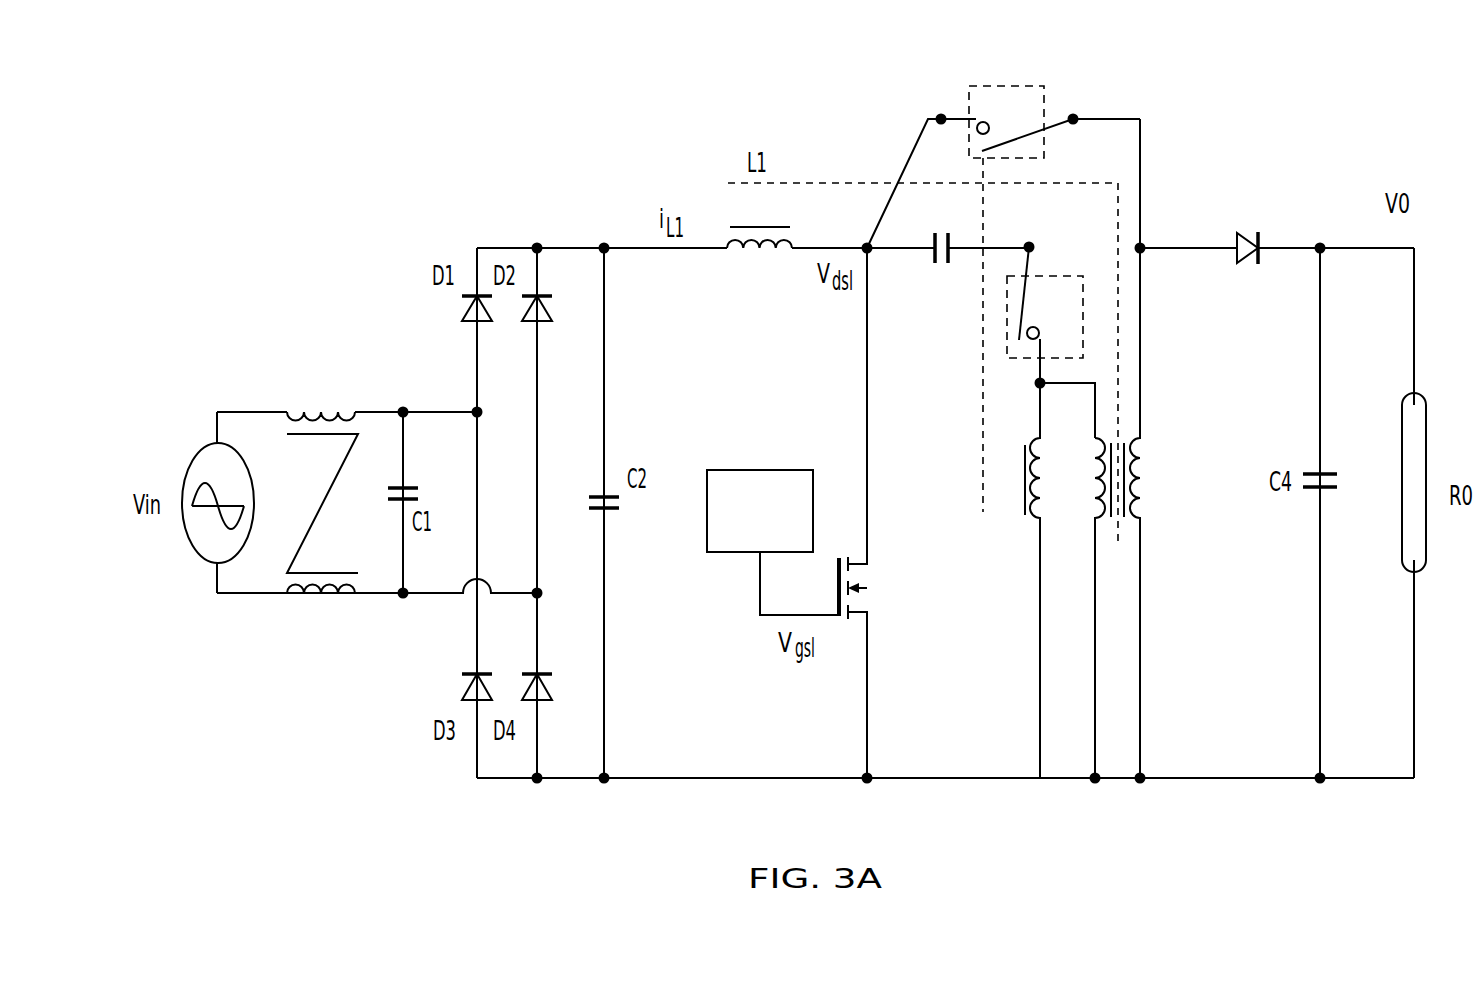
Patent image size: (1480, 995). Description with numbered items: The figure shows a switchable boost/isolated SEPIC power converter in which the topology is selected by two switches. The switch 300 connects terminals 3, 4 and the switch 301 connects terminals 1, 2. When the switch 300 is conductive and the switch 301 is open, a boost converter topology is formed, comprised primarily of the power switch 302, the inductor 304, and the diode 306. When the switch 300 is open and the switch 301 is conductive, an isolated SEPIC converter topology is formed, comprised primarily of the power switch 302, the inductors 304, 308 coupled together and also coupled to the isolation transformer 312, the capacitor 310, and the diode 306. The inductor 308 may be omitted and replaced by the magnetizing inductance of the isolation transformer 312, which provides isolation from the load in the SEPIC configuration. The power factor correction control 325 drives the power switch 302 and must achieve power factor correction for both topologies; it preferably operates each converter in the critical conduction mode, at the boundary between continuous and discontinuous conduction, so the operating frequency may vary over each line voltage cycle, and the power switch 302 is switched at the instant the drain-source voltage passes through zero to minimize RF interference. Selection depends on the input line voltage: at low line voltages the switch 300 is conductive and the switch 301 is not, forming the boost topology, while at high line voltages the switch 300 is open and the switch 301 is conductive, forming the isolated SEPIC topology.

The switch 300 is at (1003, 167).
The switch 301 is at (1056, 315).
The power switch 302 is at (870, 605).
The inductor 304 is at (750, 252).
The diode 306 is at (1245, 264).
The inductor 308 is at (1038, 518).
The capacitor 310 is at (955, 203).
The isolation transformer 312 is at (1145, 452).
The power factor correction (PFC) control 325 is at (748, 468).
The switch terminal 1 is at (1034, 380).
The switch terminal 2 is at (1038, 247).
The switch terminal 3 is at (950, 106).
The switch terminal 4 is at (1076, 106).